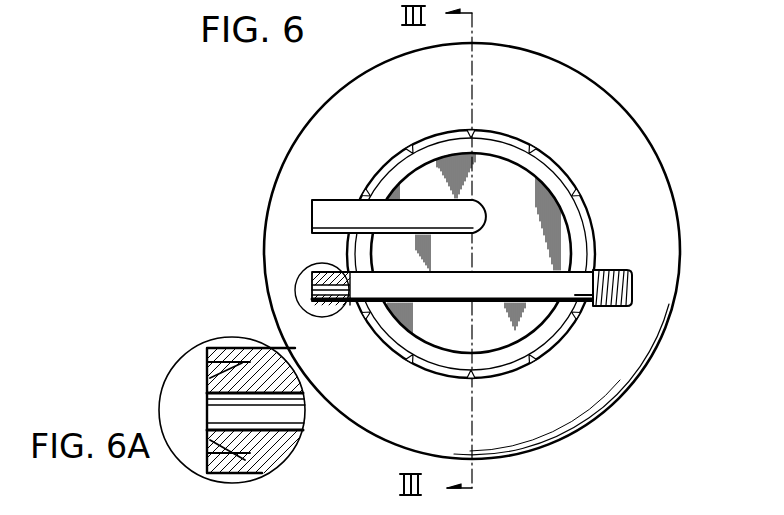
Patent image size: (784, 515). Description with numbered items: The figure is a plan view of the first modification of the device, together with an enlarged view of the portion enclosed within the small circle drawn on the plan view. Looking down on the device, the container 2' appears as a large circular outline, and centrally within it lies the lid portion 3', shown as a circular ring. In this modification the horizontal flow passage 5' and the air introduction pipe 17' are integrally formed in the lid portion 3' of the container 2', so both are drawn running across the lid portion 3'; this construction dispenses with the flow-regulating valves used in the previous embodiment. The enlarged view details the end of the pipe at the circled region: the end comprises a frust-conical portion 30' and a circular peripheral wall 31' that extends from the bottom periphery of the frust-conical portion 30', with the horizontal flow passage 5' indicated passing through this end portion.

In FIG. 6, the container 2' is at (482, 251).
In FIG. 6, the lid portion 3' is at (477, 254).
In FIG. 6, the air introduction pipe 17' is at (399, 193).
In FIG. 6A, the frust-conical portion 30' is at (237, 379).
In FIG. 6A, the horizontal flow passage 5' is at (256, 359).
In FIG. 6A, the circular peripheral wall 31' is at (263, 469).